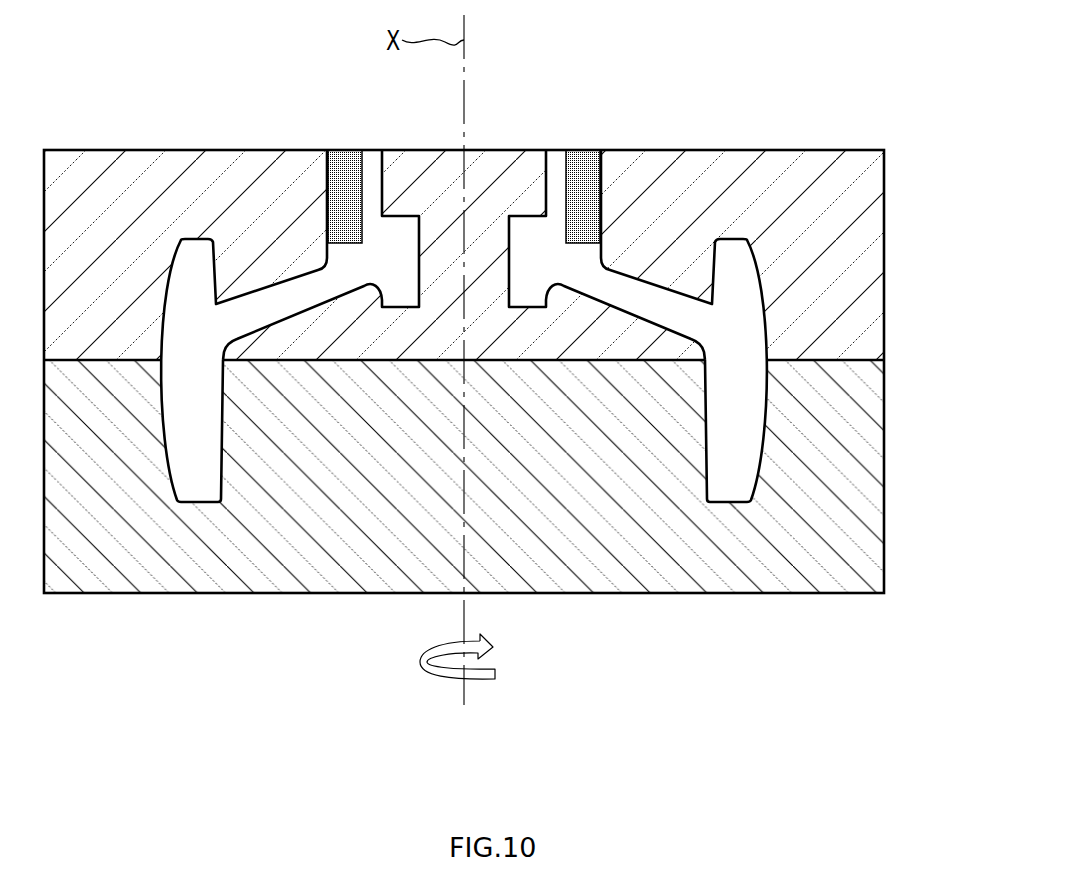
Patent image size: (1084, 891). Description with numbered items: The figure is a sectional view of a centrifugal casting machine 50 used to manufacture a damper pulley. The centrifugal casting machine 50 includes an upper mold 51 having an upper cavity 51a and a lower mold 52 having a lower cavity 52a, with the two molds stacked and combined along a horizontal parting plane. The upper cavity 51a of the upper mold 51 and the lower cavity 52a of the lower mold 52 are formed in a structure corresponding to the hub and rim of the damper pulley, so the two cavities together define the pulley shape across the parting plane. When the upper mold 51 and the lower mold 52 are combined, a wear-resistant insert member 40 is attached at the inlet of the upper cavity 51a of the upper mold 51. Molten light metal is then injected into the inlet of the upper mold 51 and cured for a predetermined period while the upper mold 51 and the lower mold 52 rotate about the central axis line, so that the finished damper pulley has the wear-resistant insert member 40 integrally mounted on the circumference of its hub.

The wear-resistant insert member 40 is at (586, 165).
The centrifugal casting machine 50 is at (501, 329).
The upper mold 51 is at (499, 224).
The upper cavity 51a is at (743, 302).
The lower mold 52 is at (499, 476).
The lower cavity 52a is at (742, 420).